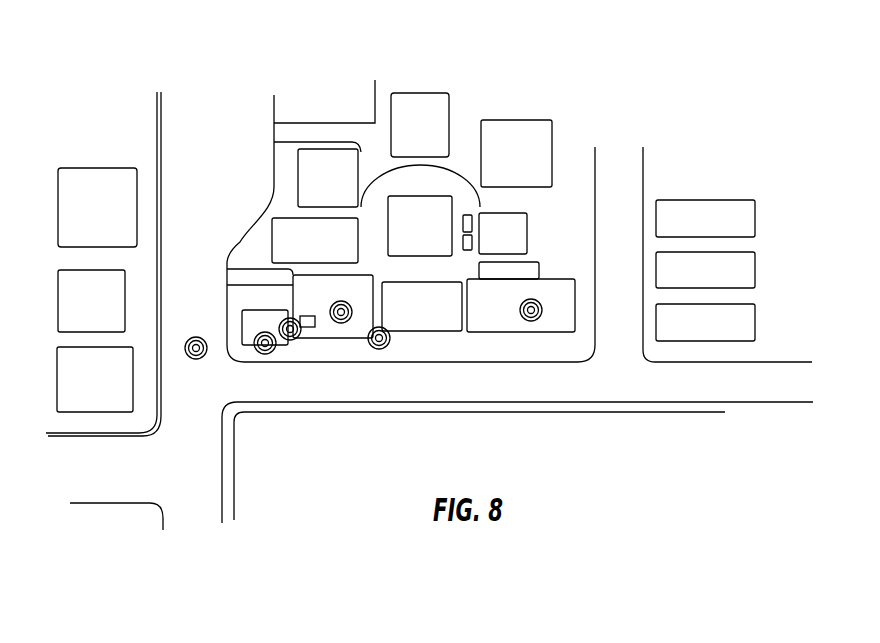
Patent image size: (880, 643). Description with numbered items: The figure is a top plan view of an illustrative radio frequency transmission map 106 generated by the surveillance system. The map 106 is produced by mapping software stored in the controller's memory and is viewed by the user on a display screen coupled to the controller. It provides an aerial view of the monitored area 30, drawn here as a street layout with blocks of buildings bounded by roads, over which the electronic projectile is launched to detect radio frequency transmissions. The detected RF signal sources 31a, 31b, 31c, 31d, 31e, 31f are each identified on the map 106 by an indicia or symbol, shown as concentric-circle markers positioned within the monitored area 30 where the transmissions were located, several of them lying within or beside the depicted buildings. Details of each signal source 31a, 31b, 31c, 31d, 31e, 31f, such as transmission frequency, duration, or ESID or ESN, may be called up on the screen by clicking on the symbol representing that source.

The monitored area 30 is at (743, 126).
The map 106 is at (696, 107).
The RF signal source 31a is at (198, 360).
The RF signal source 31b is at (258, 337).
The RF signal source 31c is at (290, 341).
The RF signal source 31d is at (341, 324).
The RF signal source 31e is at (386, 348).
The RF signal source 31f is at (526, 322).